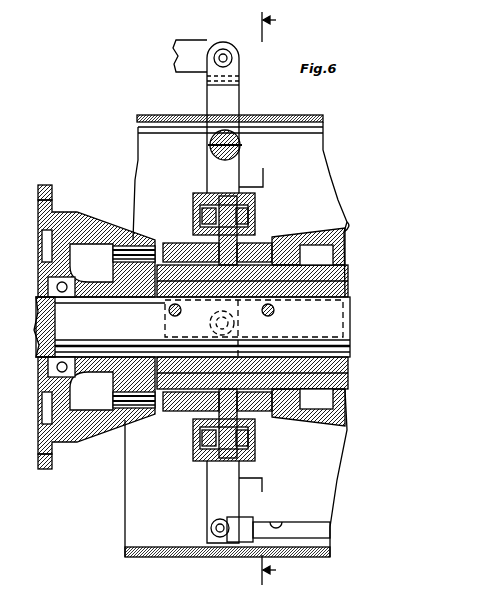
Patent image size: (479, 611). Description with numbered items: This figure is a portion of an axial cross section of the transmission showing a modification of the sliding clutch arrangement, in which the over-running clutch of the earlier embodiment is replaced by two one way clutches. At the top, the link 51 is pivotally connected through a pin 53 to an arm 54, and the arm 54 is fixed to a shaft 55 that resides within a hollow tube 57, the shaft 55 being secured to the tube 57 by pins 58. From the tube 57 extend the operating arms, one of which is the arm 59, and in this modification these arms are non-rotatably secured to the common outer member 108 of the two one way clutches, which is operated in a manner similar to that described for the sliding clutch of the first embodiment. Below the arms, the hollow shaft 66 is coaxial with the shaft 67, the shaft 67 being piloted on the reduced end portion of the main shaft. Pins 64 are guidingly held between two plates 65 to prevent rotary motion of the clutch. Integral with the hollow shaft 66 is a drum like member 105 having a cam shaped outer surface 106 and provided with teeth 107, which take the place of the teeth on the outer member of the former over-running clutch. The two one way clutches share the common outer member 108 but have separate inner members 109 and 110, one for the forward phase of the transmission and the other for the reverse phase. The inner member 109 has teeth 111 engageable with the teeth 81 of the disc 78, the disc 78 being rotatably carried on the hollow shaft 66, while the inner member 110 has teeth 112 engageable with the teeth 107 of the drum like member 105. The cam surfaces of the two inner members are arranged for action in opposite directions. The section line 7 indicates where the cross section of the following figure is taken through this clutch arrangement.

The section line 7— 7 is at (272, 301).
The link 51 is at (192, 50).
The pin 53 is at (228, 49).
The arm 54 is at (232, 99).
The shaft 55 is at (212, 133).
The hollow tube 57 is at (242, 160).
The pins 58 is at (212, 147).
The arm 59 is at (214, 173).
The pins 64 is at (254, 328).
The plates 65 is at (274, 317).
The hollow shaft 66 is at (310, 290).
The shaft 67 is at (179, 327).
The disc 78 is at (341, 230).
The teeth 81 is at (284, 240).
The drum like member 105 is at (88, 422).
The cam shaped outer surface 106 is at (88, 232).
The teeth 107 is at (141, 245).
The common outer member 108 is at (215, 468).
The inner member 109 is at (273, 423).
The inner member 110 is at (213, 432).
The teeth 111 is at (258, 250).
The teeth 112 is at (178, 250).